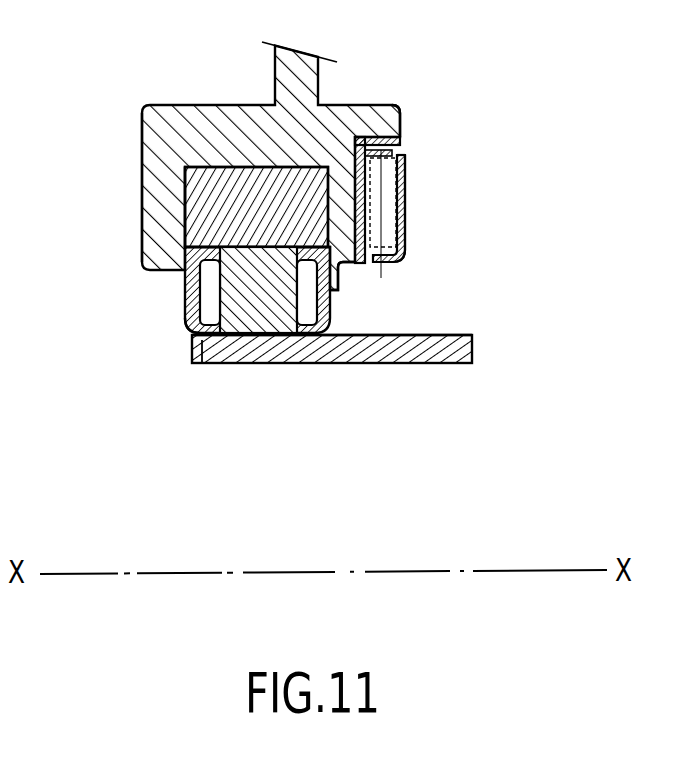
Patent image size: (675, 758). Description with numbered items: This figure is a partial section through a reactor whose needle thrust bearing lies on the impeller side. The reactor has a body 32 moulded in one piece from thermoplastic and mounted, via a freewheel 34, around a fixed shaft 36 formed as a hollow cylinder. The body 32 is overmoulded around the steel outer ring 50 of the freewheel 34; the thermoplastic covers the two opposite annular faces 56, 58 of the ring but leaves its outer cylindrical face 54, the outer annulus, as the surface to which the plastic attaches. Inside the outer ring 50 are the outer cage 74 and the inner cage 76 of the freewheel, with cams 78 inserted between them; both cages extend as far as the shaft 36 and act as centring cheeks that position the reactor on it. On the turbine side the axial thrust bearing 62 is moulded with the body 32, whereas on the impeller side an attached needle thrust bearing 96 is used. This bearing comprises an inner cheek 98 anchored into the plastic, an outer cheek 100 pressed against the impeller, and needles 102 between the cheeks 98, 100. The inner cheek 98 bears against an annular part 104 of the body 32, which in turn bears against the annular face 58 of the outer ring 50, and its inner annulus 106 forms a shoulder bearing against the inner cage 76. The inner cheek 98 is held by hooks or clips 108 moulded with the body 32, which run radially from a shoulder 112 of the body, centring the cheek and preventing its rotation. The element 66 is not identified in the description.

The body 32 is at (172, 102).
The freewheel 34 is at (190, 341).
The fixed shaft 36 is at (452, 363).
The outer ring 50 is at (217, 216).
The outer cylindrical face 54 is at (247, 163).
The annular face 56 is at (183, 195).
The annular face 58 is at (408, 165).
The axial thrust bearing 62 is at (142, 132).
The plate top surface 66 is at (383, 337).
The outer cage 74 is at (192, 322).
The inner cage 76 is at (205, 336).
The cams 78 is at (254, 324).
The needle thrust bearing 96 is at (412, 222).
The inner cheek 98 is at (408, 193).
The outer cheek 100 is at (408, 212).
The needles 102 is at (405, 245).
The annular part 104 is at (367, 268).
The inner annulus 106 is at (343, 280).
The hooks or clips 108 is at (402, 136).
The shoulder 112 is at (371, 116).